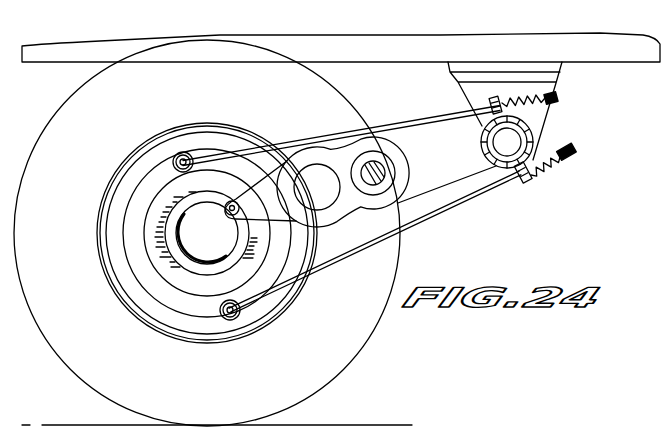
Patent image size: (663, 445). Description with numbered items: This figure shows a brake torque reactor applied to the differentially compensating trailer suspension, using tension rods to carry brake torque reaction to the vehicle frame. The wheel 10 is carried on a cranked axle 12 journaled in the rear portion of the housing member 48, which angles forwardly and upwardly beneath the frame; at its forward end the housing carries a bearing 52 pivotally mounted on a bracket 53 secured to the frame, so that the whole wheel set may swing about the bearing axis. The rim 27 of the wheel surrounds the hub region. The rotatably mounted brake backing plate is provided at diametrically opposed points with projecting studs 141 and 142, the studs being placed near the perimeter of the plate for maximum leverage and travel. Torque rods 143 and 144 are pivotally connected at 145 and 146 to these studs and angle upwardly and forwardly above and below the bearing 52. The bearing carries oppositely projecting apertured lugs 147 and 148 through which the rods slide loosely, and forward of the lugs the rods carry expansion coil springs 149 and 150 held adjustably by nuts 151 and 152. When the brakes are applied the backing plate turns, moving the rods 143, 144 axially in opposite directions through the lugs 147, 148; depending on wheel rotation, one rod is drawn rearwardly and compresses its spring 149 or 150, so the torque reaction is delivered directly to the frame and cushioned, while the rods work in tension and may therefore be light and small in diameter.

The wheel 10 is at (355, 358).
The cranked axle 12 is at (207, 233).
The rim 27 is at (131, 262).
The housing member 48 is at (386, 182).
The bearing 52 is at (535, 129).
The bracket 53 is at (456, 87).
The stud 141 is at (188, 156).
The stud 142 is at (229, 320).
The torque rod 143 is at (346, 127).
The torque rod 144 is at (422, 221).
The pivotal connection 145 is at (174, 159).
The pivotal connection 146 is at (219, 318).
The apertured lug 147 is at (498, 97).
The apertured lug 148 is at (520, 185).
The expansion coil spring 149 is at (554, 94).
The expansion coil spring 150 is at (548, 171).
The nut 151 is at (548, 109).
The nut 152 is at (564, 159).